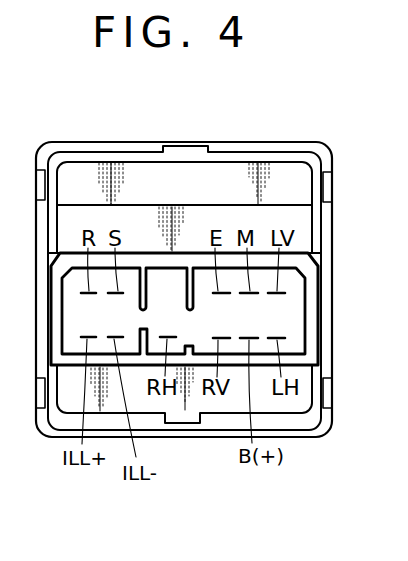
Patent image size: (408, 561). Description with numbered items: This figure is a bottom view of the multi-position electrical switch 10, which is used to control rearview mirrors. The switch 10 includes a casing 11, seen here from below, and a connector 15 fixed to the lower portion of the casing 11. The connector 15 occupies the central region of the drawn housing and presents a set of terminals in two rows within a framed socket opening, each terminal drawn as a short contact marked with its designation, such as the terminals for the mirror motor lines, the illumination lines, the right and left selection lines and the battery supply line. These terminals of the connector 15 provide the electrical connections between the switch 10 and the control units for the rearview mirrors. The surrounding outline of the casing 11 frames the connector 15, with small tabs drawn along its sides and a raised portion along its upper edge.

The switch 10 is at (288, 139).
The casing 11 is at (228, 145).
The connector 15 is at (54, 313).